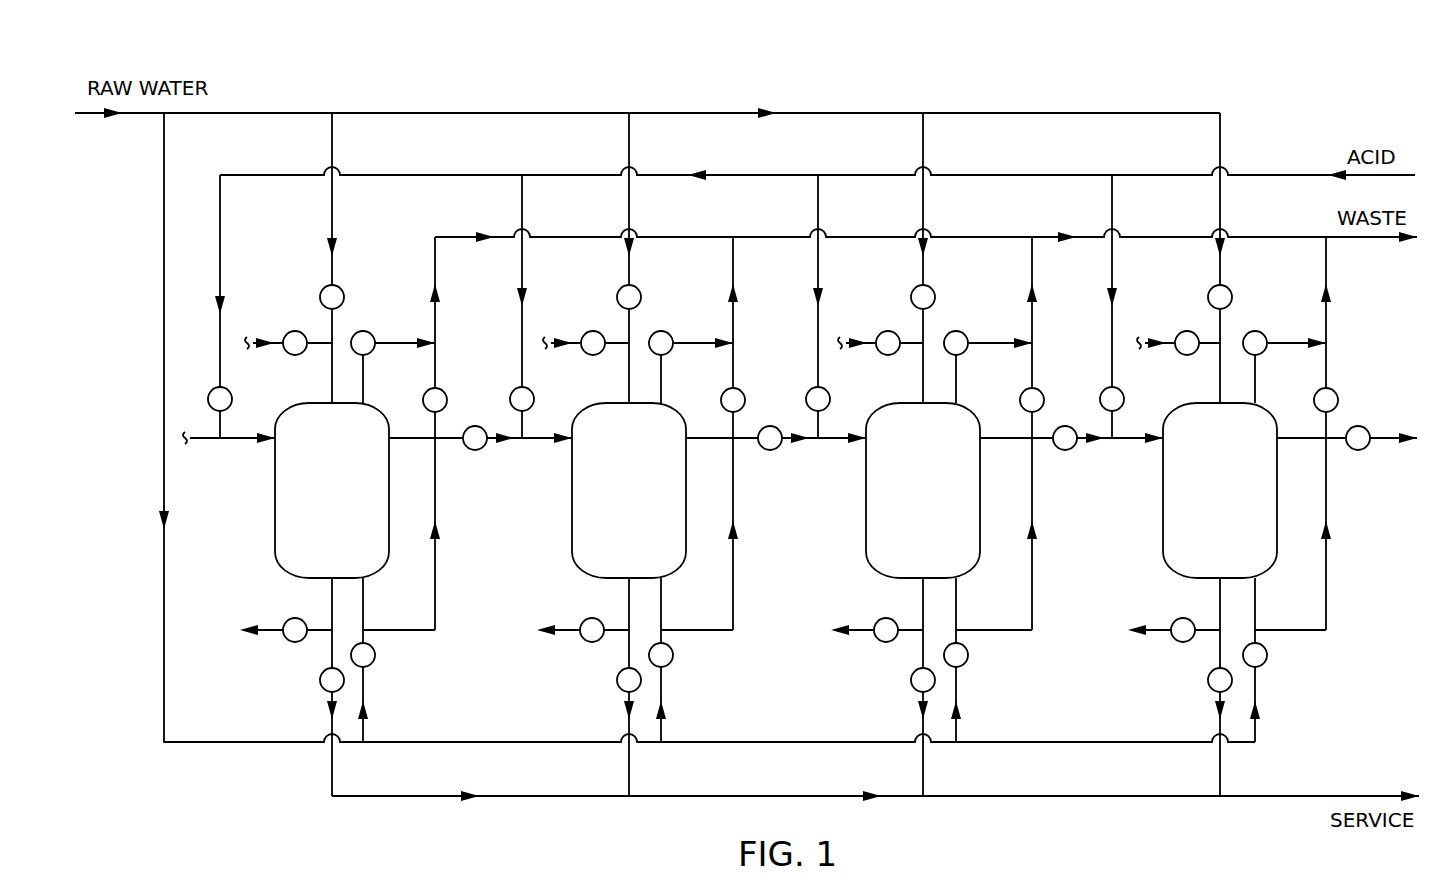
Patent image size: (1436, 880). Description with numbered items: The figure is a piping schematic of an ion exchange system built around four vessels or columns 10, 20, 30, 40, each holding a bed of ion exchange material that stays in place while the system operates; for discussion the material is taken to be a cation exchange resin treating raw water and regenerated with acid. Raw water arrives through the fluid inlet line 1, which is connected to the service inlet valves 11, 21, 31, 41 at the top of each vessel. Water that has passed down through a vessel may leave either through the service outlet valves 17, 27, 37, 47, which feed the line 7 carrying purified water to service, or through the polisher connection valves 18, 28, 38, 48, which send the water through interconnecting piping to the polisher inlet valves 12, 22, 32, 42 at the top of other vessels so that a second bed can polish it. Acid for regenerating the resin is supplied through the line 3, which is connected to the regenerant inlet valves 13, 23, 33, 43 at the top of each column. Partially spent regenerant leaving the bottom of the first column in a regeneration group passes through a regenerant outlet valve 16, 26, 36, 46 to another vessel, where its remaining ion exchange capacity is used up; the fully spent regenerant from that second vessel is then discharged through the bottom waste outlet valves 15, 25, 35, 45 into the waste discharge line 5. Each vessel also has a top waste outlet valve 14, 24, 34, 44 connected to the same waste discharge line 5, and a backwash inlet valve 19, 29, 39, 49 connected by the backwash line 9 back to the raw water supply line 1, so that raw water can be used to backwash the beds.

The fluid inlet line 1 is at (486, 112).
The acid line 3 is at (1040, 174).
The waste discharge line 5 is at (766, 236).
The service line 7 is at (693, 797).
The backwash line 9 is at (250, 743).
The vessel 10 is at (320, 503).
The service inlet valve 11 is at (321, 292).
The polisher inlet valve 12 is at (288, 333).
The regenerant inlet valve 13 is at (212, 390).
The top waste outlet valve 14 is at (371, 334).
The bottom waste outlet valve 15 is at (443, 392).
The regenerant outlet valve 16 is at (482, 447).
The service outlet valve 17 is at (322, 684).
The polisher connection valve 18 is at (288, 622).
The backwash inlet valve 19 is at (374, 658).
The vessel 20 is at (617, 503).
The service inlet valve 21 is at (618, 292).
The polisher inlet valve 22 is at (586, 333).
The regenerant inlet valve 23 is at (513, 391).
The top waste outlet valve 24 is at (669, 334).
The bottom waste outlet valve 25 is at (724, 392).
The regenerant outlet valve 26 is at (778, 448).
The service outlet valve 27 is at (619, 684).
The polisher connection valve 28 is at (585, 622).
The backwash inlet valve 29 is at (672, 658).
The vessel 30 is at (911, 503).
The service inlet valve 31 is at (912, 292).
The polisher inlet valve 32 is at (880, 333).
The regenerant inlet valve 33 is at (810, 391).
The top waste outlet valve 34 is at (965, 334).
The bottom waste outlet valve 35 is at (1022, 392).
The regenerant outlet valve 36 is at (1074, 448).
The service outlet valve 37 is at (913, 684).
The polisher connection valve 38 is at (878, 621).
The backwash inlet valve 39 is at (968, 658).
The vessel 40 is at (1208, 503).
The service inlet valve 41 is at (1209, 292).
The polisher inlet valve 42 is at (1179, 333).
The regenerant inlet valve 43 is at (1103, 391).
The top waste outlet valve 44 is at (1263, 334).
The bottom waste outlet valve 45 is at (1317, 392).
The regenerant outlet valve 46 is at (1366, 448).
The service outlet valve 47 is at (1210, 684).
The polisher connection valve 48 is at (1176, 621).
The backwash inlet valve 49 is at (1266, 658).